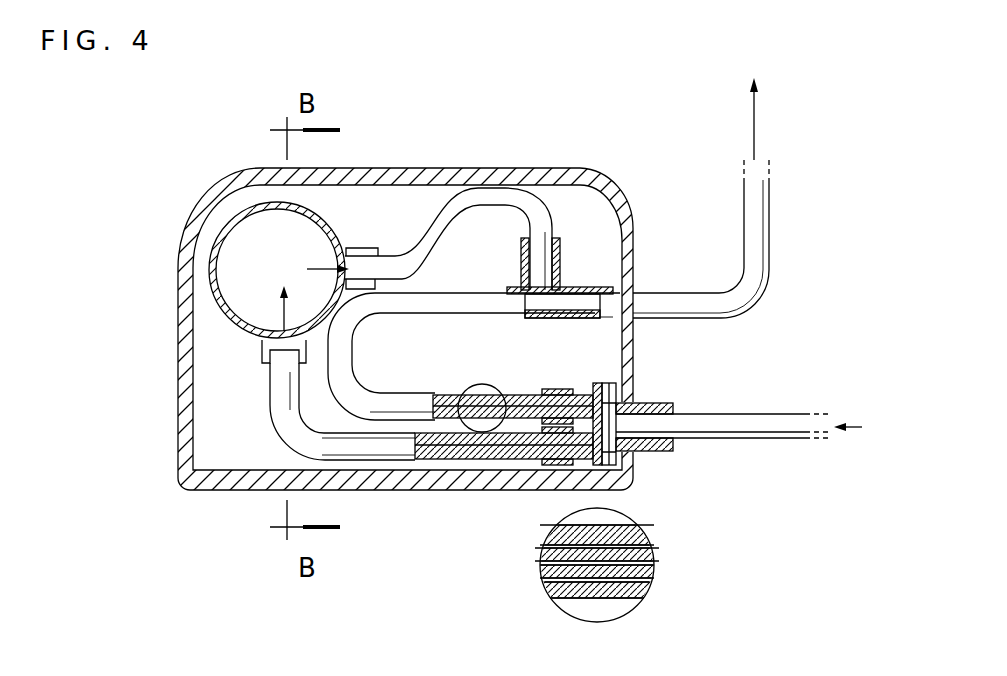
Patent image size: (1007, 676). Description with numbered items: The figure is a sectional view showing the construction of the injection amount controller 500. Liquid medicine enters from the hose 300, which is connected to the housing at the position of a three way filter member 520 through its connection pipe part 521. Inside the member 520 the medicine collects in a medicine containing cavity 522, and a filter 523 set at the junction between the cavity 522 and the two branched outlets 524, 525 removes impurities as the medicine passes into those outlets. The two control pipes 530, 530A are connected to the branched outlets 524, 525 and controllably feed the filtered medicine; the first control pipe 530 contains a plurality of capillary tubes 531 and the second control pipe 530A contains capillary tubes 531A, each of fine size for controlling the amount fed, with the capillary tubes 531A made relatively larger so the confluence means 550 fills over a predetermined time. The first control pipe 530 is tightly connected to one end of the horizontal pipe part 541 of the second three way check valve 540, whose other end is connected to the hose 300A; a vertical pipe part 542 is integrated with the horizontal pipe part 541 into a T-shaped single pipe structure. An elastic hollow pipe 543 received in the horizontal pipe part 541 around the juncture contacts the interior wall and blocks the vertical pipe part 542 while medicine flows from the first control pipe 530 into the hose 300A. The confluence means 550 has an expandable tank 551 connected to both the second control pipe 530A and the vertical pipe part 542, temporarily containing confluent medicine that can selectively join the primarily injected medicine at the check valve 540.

The injection amount controller 500 is at (170, 367).
The confluence means 550 is at (243, 278).
The expandable tank 551 is at (213, 266).
The second three way check valve 540 is at (570, 240).
The horizontal pipe part 541 is at (578, 288).
The vertical pipe part 542 is at (520, 255).
The elastic hollow pipe 543 is at (608, 312).
The hose 300A is at (762, 232).
The hose 300 is at (780, 424).
The first control pipe 530 is at (440, 397).
The capillary tubes 531 is at (650, 580).
The second control pipe 530A is at (412, 470).
The capillary tubes 531A is at (466, 470).
The branched outlet 524 is at (586, 394).
The medicine containing cavity 522 is at (604, 392).
The filter 523 is at (620, 404).
The connection pipe part 521 is at (660, 450).
The three way filter member 520 is at (590, 488).
The branched outlet 525 is at (490, 428).